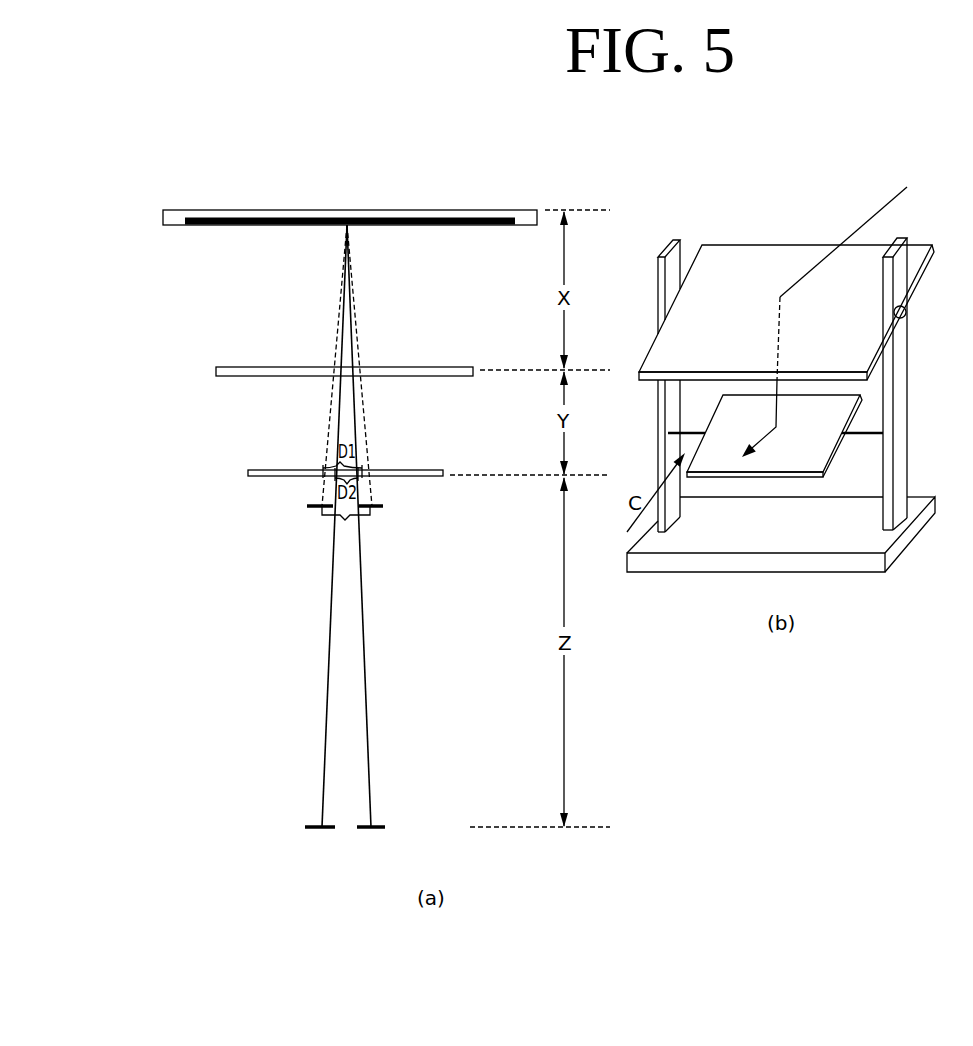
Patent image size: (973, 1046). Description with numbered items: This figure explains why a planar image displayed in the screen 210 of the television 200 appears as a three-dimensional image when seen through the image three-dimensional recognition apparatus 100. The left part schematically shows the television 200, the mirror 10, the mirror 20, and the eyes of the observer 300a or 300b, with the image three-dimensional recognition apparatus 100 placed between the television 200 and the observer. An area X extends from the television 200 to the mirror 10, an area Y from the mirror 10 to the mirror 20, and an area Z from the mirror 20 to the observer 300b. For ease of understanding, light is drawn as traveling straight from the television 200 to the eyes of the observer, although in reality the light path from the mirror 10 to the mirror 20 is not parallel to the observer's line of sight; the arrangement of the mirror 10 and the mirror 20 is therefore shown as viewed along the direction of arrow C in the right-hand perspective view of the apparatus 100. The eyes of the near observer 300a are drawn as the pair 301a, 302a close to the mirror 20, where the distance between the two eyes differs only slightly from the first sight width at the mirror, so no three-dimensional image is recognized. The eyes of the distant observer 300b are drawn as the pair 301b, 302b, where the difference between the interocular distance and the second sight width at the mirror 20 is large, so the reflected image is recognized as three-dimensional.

The television 200 is at (466, 170).
The screen 210 is at (216, 226).
The mirror 10 is at (258, 367).
The mirror 20 is at (270, 470).
The image three-dimensional recognition apparatus 100 is at (474, 337).
The first slit edge (upper) 301a is at (310, 507).
The second slit edge (upper) 302a is at (376, 509).
The observer 300a is at (426, 517).
The first slit edge (lower) 301b is at (312, 823).
The second slit edge (lower) 302b is at (366, 823).
The observer 300b is at (408, 809).